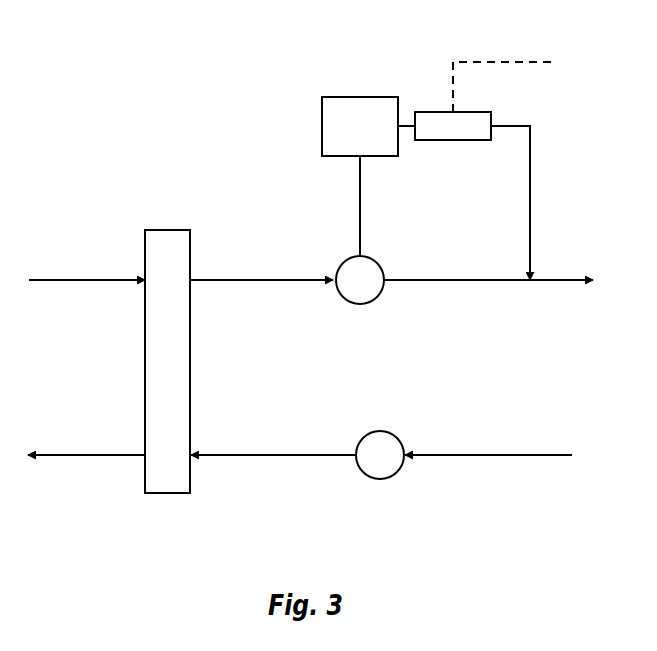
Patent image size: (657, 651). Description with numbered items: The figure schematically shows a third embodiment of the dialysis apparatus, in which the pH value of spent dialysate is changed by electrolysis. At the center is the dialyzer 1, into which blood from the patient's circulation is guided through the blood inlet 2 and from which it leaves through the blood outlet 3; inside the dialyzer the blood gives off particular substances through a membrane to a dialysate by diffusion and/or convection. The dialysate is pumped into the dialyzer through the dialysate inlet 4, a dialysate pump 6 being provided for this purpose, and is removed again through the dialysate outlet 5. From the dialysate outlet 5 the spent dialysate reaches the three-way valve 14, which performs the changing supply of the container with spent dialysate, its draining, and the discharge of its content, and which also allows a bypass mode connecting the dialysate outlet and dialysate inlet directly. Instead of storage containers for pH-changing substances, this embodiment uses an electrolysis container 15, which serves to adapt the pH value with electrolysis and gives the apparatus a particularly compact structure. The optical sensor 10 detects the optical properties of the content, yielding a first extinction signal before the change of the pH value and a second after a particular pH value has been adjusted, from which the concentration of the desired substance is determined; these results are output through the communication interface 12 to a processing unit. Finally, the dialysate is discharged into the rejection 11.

The dialyzer 1 is at (138, 347).
The blood inlet 2 is at (68, 273).
The blood outlet 3 is at (80, 458).
The dialysate inlet 4 is at (262, 458).
The dialysate outlet 5 is at (265, 283).
The dialysate pump 6 is at (380, 430).
The optical sensor 10 is at (453, 143).
The rejection 11 is at (553, 277).
The communication interface 12 is at (533, 61).
The three-way valve 14 is at (345, 258).
The electrolysis container 15 is at (358, 94).